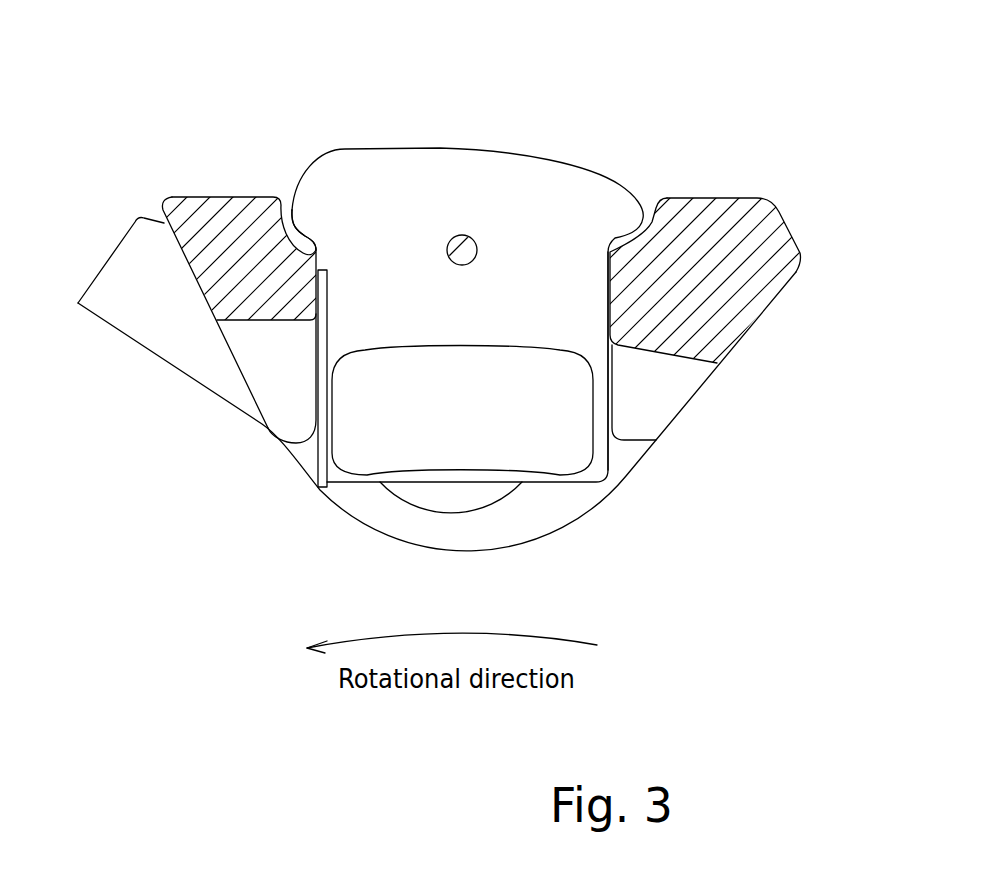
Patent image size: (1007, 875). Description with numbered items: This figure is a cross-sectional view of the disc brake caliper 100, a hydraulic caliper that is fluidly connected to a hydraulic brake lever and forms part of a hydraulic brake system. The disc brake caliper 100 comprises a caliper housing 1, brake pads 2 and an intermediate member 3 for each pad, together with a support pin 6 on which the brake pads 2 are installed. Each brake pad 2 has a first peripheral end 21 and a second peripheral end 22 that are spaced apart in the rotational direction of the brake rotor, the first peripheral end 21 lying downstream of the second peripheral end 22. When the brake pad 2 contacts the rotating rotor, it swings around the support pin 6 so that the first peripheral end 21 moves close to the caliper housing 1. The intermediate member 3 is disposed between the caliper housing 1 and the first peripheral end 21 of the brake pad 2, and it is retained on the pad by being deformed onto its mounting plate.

The caliper housing 1 is at (206, 186).
The brake pad 2 is at (504, 267).
The first peripheral end 21 is at (270, 200).
The second peripheral end 22 is at (606, 455).
The intermediate member 3 is at (320, 458).
The support pin 6 is at (465, 235).
The disc brake caliper 100 is at (778, 170).